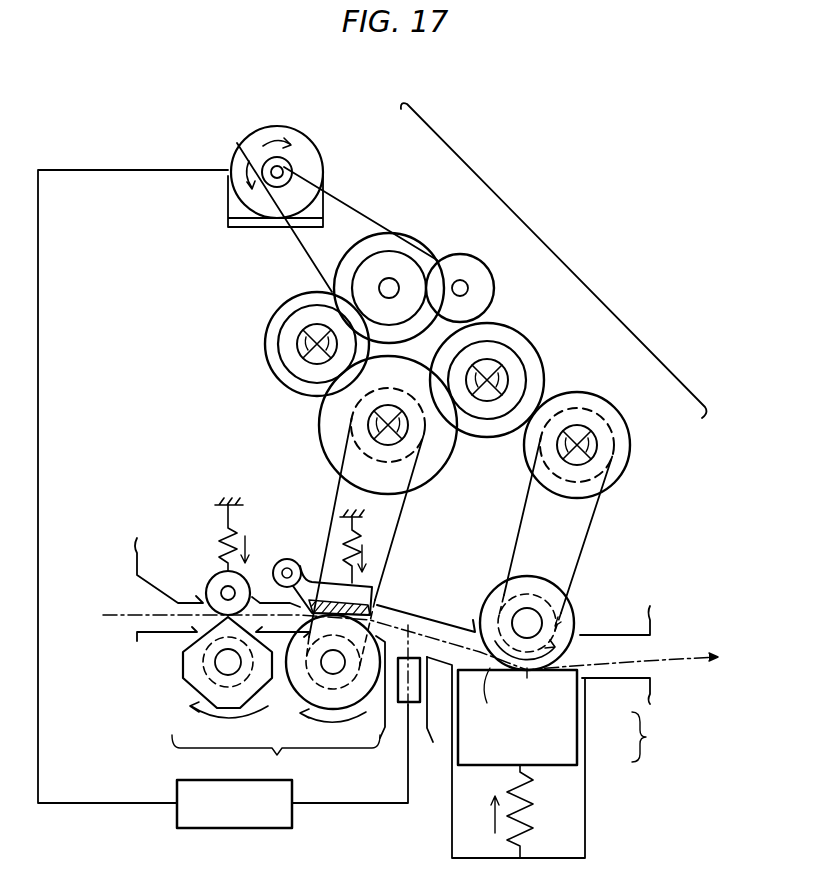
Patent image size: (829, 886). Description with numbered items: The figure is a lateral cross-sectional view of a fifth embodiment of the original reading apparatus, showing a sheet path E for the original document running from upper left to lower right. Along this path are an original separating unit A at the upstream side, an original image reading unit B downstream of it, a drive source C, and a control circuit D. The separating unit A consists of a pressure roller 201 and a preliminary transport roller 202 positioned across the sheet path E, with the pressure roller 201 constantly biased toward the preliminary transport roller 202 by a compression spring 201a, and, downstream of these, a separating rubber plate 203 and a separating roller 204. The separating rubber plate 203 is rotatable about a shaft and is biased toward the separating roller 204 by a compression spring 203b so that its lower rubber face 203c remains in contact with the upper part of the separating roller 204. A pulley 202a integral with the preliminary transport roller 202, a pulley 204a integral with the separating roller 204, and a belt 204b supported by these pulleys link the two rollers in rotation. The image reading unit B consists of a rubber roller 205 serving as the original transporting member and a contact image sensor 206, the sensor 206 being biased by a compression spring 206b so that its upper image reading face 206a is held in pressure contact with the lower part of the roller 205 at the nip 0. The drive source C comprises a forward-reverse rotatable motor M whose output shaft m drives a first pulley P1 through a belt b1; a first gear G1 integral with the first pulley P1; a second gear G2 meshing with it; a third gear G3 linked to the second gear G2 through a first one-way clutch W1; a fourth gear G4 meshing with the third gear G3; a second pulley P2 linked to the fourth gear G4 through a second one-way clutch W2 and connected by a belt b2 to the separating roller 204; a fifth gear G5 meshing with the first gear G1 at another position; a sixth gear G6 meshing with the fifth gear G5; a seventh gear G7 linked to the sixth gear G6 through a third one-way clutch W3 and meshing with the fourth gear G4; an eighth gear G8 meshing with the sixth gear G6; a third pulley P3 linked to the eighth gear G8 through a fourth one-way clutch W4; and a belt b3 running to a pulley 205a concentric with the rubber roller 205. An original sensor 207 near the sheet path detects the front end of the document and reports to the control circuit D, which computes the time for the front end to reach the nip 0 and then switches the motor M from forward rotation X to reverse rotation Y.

The motor M is at (264, 155).
The output shaft m is at (238, 142).
The forward rotation X is at (255, 189).
The reverse rotation Y is at (284, 147).
The belt b1 is at (348, 203).
The belt b2 is at (403, 512).
The belt b3 is at (593, 507).
The first pulley P1 is at (423, 243).
The second pulley P2 is at (393, 463).
The third pulley P3 is at (548, 473).
The first gear G1 is at (399, 270).
The second gear G2 is at (288, 326).
The third gear G3 is at (295, 325).
The fourth gear G4 is at (367, 436).
The fifth gear G5 is at (466, 268).
The sixth gear G6 is at (512, 386).
The seventh gear G7 is at (518, 368).
The eighth gear G8 is at (584, 440).
The first one-way clutch W1 is at (297, 338).
The second one-way clutch W2 is at (368, 421).
The third one-way clutch W3 is at (485, 398).
The fourth one-way clutch W4 is at (593, 438).
The drive source C is at (585, 254).
The sheet path E is at (145, 615).
The original separating unit A is at (286, 776).
The original image reading unit B is at (664, 752).
The control circuit D is at (243, 817).
The pressure roller 201 is at (212, 583).
The compression spring 201a is at (218, 542).
The preliminary transport roller 202 is at (197, 667).
The pulley 202a is at (210, 685).
The separating rubber plate 203 is at (367, 587).
The compression spring 203b is at (332, 541).
The friction pad 203c is at (373, 601).
The separating roller 204 is at (310, 680).
The pulley 204a is at (312, 673).
The belt 204b is at (278, 690).
The rubber roller 205 is at (558, 638).
The pulley 205a is at (537, 578).
The contact image sensor 206 is at (562, 730).
The image reading face 206a is at (500, 696).
The compression spring 206b is at (531, 822).
The original sensor 207 is at (402, 704).
The nip 0 is at (528, 683).